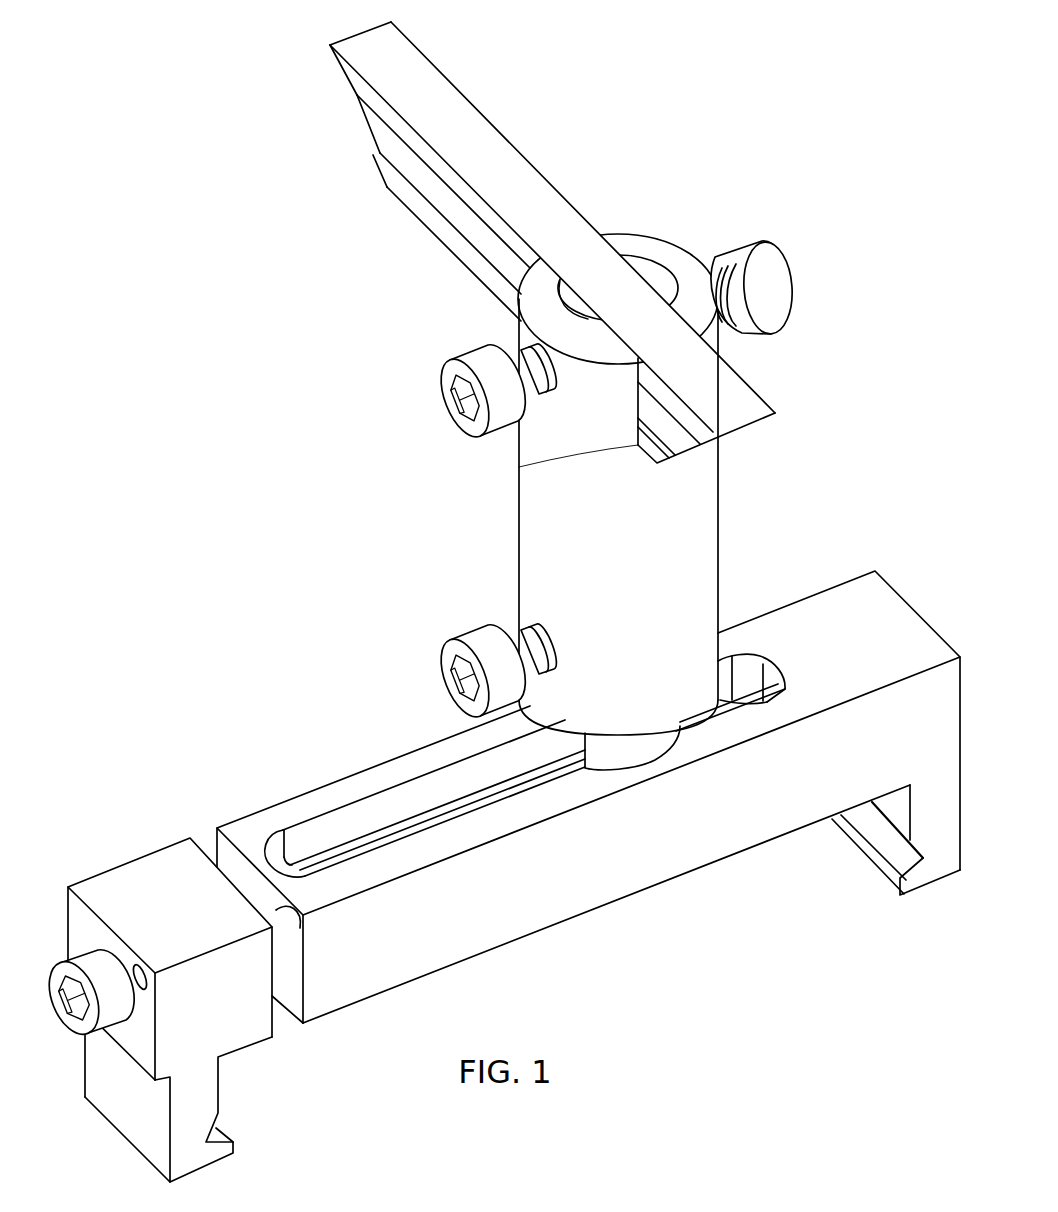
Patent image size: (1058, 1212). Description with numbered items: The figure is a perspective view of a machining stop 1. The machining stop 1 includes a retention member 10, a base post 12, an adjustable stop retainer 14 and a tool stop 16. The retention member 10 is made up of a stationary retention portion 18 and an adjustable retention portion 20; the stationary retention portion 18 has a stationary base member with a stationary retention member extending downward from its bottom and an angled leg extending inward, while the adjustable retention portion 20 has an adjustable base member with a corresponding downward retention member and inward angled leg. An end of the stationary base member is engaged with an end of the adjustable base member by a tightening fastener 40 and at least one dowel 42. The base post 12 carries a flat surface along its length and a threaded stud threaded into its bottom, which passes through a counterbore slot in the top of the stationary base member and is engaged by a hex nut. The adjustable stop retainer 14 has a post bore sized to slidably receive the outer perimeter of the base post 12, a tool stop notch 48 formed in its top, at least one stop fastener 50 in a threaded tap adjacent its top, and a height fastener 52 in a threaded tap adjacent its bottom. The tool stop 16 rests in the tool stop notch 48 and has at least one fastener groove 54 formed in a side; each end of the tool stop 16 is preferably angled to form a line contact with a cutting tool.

The machining stop 1 is at (889, 433).
The retention member 10 is at (638, 946).
The base post 12 is at (630, 752).
The adjustable stop retainer 14 is at (722, 536).
The tool stop 16 is at (412, 68).
The stationary retention portion 18 is at (935, 910).
The adjustable retention portion 20 is at (123, 830).
The tightening fastener 40 is at (98, 1020).
The dowel 42 is at (285, 928).
The tool stop notch 48 is at (517, 467).
The stop fastener 50 is at (453, 362).
The height fastener 52 is at (462, 633).
The fastener groove 54 is at (367, 122).